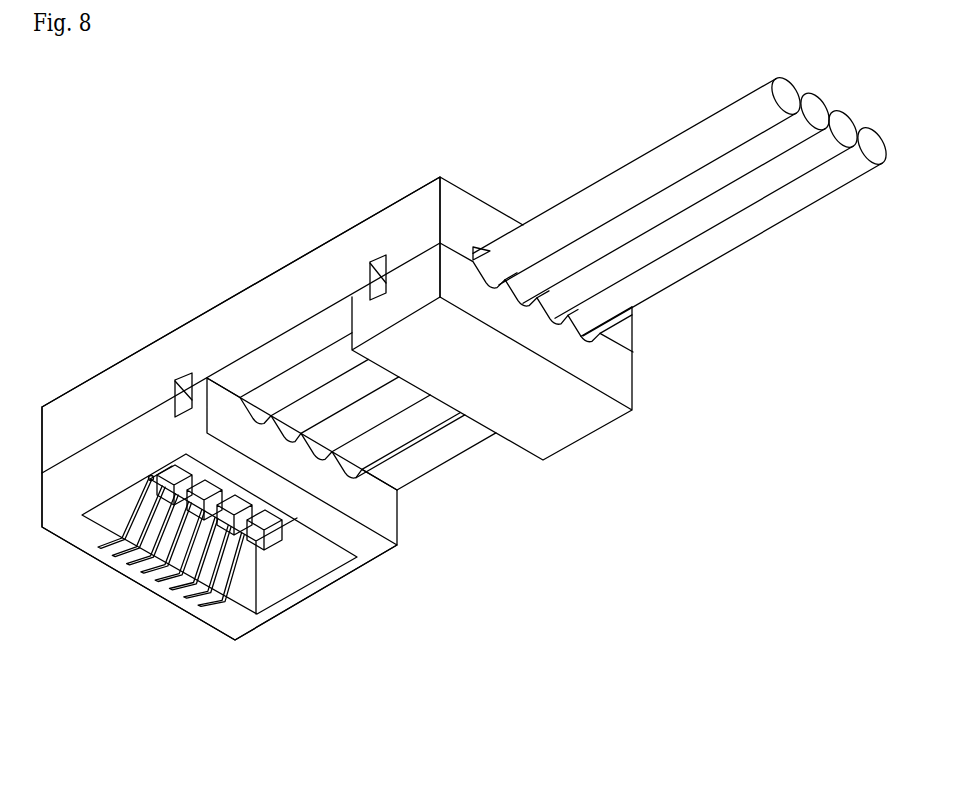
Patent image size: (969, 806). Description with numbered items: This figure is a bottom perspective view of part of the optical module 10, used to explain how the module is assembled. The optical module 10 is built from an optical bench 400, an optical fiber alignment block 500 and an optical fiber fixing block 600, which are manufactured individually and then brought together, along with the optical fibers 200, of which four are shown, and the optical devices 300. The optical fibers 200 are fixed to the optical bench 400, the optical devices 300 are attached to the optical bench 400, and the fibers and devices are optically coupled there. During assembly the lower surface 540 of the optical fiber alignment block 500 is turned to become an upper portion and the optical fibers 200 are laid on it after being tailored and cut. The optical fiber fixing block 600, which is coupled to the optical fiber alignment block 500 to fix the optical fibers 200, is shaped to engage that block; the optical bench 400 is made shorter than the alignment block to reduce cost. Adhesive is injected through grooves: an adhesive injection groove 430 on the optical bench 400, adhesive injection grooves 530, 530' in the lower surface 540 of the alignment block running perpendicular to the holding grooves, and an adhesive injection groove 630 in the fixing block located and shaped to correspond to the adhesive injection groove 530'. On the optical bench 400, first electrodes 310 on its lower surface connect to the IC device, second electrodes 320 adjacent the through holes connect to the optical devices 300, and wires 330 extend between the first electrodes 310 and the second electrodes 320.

The optical module 10 is at (146, 135).
The optical fibers 200 is at (625, 185).
The optical devices 300 is at (263, 548).
The first electrodes 310 is at (205, 607).
The second electrodes 320 is at (152, 480).
The wires 330 is at (127, 510).
The optical bench 400 is at (373, 545).
The adhesive injection groove 430 is at (178, 395).
The optical fiber alignment block 500 is at (258, 300).
The adhesive injection groove 530 is at (191, 313).
The adhesive injection groove 530' is at (389, 198).
The lower surface 540 is at (433, 452).
The optical fiber fixing block 600 is at (576, 412).
The adhesive injection groove 630 is at (372, 265).